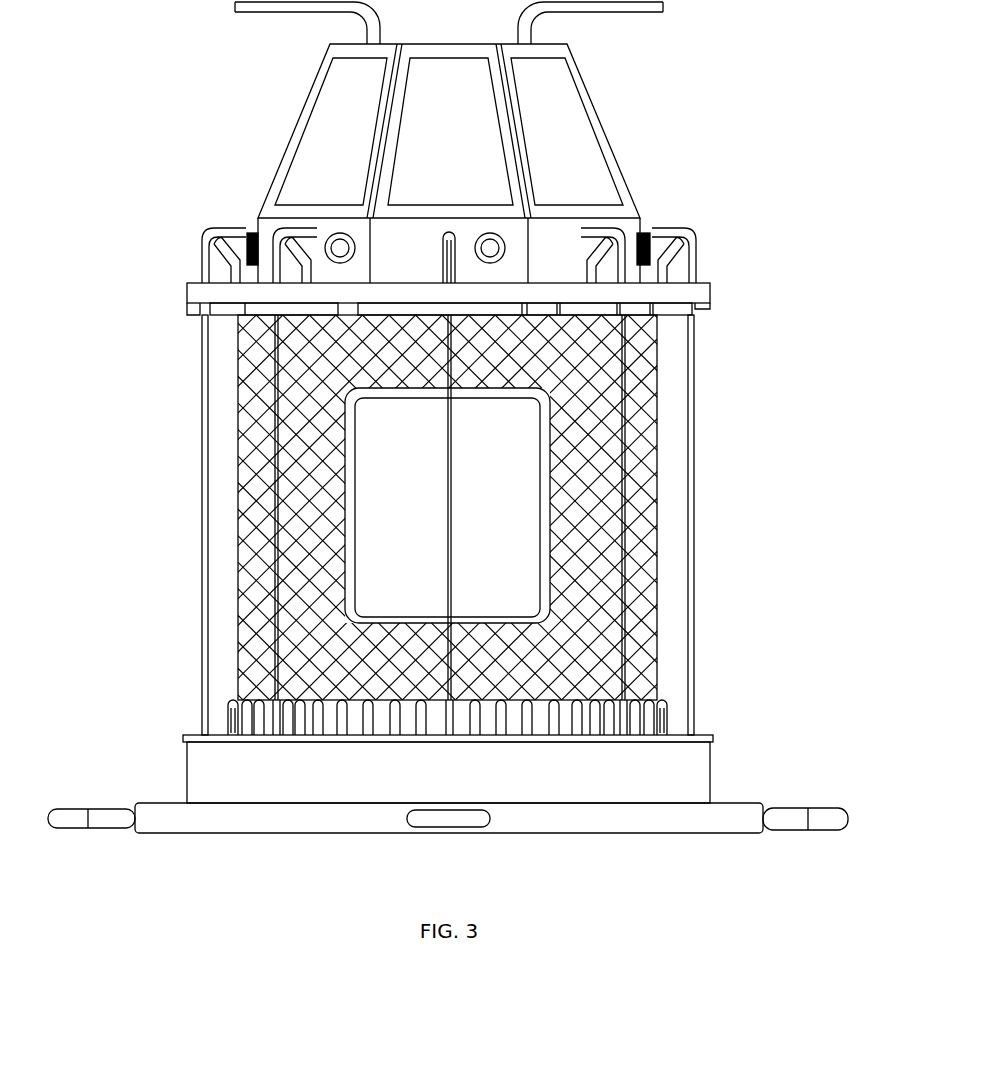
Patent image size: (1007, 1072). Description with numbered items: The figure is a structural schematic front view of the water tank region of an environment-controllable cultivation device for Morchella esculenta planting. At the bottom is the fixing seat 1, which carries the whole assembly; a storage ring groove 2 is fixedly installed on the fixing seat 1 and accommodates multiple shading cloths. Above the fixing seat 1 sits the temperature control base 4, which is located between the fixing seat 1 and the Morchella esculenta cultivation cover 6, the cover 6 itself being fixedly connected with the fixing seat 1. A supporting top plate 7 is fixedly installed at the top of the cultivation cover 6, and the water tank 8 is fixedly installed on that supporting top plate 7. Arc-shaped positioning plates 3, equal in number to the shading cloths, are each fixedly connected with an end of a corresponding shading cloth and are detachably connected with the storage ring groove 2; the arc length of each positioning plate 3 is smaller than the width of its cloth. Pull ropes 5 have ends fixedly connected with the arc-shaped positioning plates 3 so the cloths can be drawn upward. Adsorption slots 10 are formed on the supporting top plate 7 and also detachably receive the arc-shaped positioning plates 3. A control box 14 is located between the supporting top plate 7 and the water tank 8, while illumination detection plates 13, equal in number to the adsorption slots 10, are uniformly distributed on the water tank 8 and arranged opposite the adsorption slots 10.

The fixing seat 1 is at (253, 812).
The storage ring groove 2 is at (355, 778).
The arc-shaped positioning plates 3 is at (518, 742).
The temperature control base 4 is at (605, 712).
The pull ropes 5 is at (200, 520).
The Morchella esculenta cultivation cover 6 is at (268, 470).
The supporting top plate 7 is at (272, 295).
The water tank 8 is at (283, 170).
The adsorption slots 10 is at (673, 305).
The illumination detection plates 13 is at (582, 172).
The control box 14 is at (637, 228).